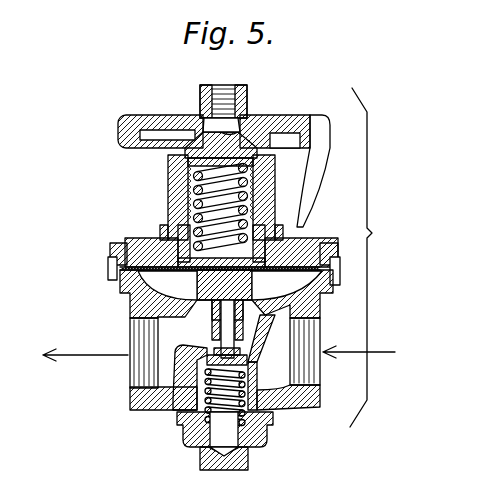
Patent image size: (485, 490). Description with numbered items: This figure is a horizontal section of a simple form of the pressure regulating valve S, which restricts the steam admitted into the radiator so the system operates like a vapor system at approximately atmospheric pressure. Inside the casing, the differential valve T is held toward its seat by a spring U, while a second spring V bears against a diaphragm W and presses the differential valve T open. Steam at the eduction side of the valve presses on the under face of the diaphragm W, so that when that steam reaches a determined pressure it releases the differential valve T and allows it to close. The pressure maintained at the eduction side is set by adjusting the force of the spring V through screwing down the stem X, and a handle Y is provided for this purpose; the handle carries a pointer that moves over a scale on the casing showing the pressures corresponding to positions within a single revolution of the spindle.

The pressure regulating valve S is at (226, 257).
The stem X is at (218, 127).
The handle Y is at (316, 118).
The spring V is at (197, 217).
The diaphragm W is at (160, 272).
The differential valve T is at (213, 328).
The spring U is at (203, 451).